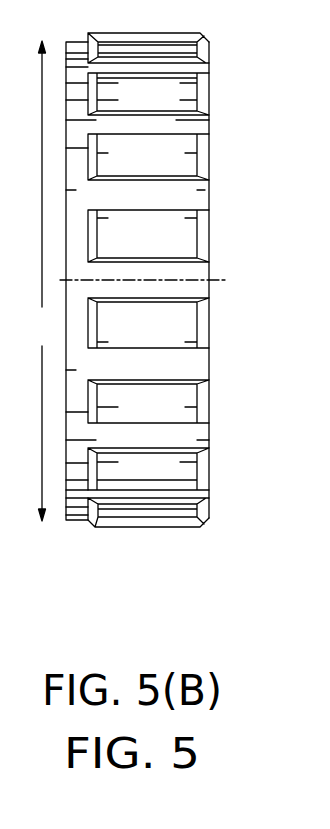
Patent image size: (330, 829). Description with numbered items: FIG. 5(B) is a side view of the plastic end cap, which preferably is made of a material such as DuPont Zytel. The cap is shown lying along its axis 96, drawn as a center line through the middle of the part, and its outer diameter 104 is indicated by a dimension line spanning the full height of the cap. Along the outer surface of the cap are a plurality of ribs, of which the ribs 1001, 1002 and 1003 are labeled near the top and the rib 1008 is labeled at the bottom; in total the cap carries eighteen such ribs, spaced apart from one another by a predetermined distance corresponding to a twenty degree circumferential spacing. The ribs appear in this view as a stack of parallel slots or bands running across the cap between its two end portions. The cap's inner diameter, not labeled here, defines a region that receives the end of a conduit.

The rib 1001 is at (198, 46).
The rib 1002 is at (201, 92).
The rib 1003 is at (197, 159).
The rib 1008 is at (211, 508).
The axis 96 is at (217, 280).
The outer diameter 104 is at (38, 281).